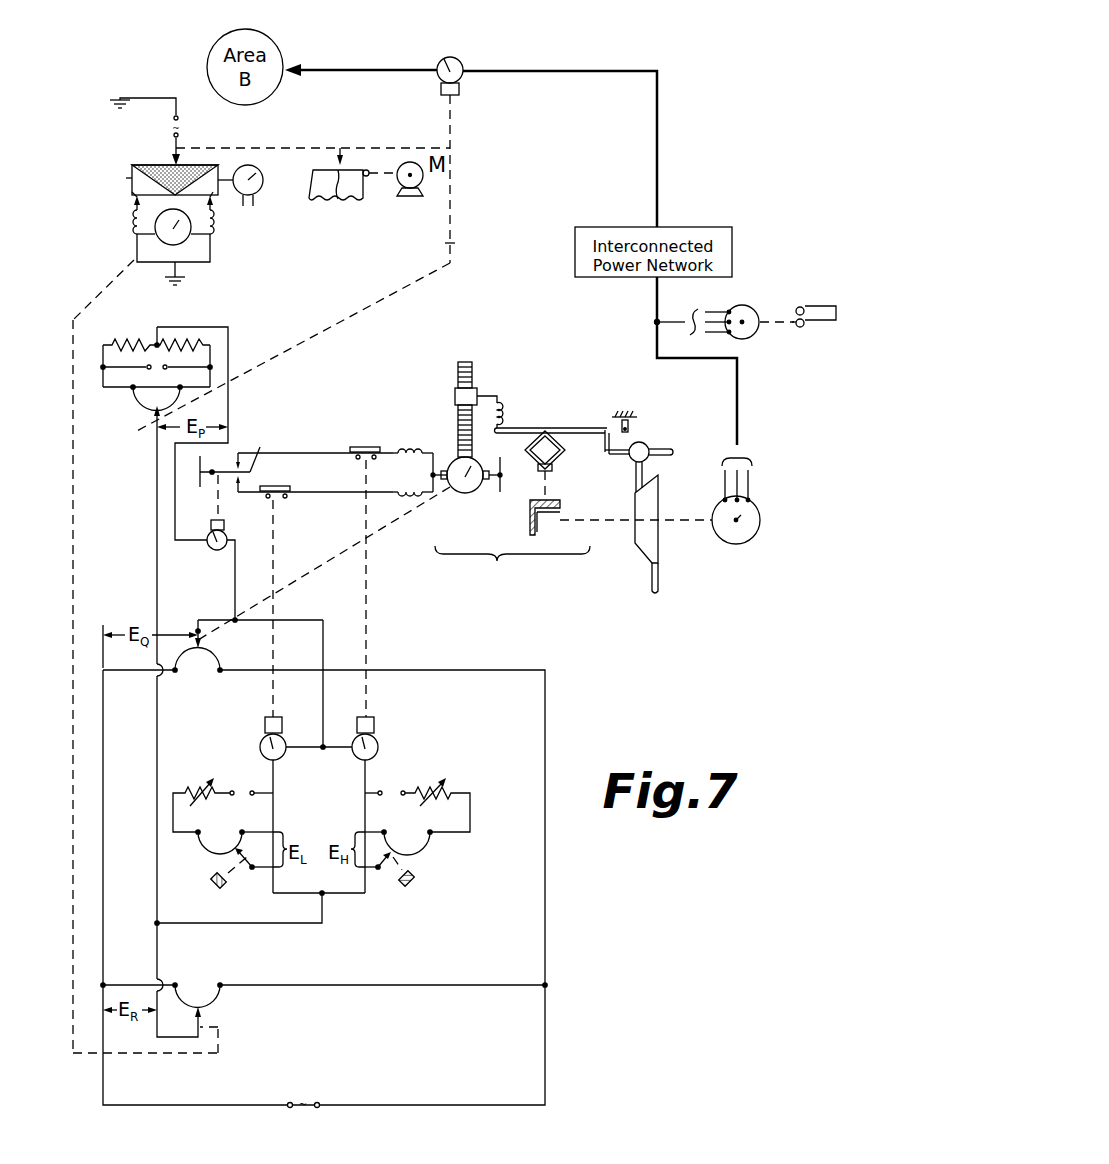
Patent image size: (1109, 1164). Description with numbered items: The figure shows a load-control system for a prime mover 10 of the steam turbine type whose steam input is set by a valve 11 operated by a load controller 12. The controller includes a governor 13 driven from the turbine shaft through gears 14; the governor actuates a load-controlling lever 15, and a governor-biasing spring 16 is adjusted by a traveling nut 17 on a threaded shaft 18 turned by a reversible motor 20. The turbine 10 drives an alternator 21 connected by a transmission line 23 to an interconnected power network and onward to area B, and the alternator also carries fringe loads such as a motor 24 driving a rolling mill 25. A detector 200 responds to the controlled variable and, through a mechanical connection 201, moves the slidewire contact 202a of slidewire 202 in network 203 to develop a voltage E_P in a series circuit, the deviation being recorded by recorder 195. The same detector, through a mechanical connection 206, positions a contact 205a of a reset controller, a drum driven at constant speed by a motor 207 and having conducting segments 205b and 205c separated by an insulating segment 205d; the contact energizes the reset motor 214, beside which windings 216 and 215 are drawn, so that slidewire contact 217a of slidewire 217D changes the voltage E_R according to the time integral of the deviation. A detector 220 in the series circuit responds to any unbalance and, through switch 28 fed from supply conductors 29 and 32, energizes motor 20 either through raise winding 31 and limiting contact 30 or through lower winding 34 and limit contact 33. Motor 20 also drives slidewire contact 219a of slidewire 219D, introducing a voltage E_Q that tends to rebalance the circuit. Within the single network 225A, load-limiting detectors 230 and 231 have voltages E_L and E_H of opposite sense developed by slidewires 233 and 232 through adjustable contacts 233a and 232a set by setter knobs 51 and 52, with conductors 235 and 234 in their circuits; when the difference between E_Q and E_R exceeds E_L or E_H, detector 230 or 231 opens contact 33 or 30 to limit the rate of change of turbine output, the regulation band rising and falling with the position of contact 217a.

The detector 200 is at (461, 61).
The transmission line 23 is at (606, 71).
The mechanical connection 201 is at (460, 243).
The contact 205a is at (173, 162).
The conducting segment 205b is at (132, 192).
The conducting segment 205c is at (213, 192).
The insulating segment 205d is at (193, 178).
The motor 207 is at (262, 172).
The left coil 216 is at (134, 234).
The right coil 215 is at (213, 234).
The reset motor 214 is at (186, 236).
The mechanical connection 206 is at (327, 147).
The recorder 195 is at (362, 226).
The motor 24 is at (755, 337).
The rolling mill 25 is at (820, 289).
The alternator 21 is at (745, 540).
The prime mover 10 is at (656, 553).
The valve 11 is at (643, 445).
The load-controlling lever 15 is at (571, 427).
The governor-biasing spring 16 is at (503, 410).
The threaded shaft 18 is at (473, 367).
The traveling nut 17 is at (455, 396).
The governor 13 is at (557, 452).
The gears 14 is at (541, 518).
The reversible motor 20 is at (471, 490).
The supply conductor 32 is at (503, 488).
The raise motor winding 31 is at (410, 450).
The lower motor winding 34 is at (410, 498).
The load controller 12 is at (488, 586).
The switch 28 is at (251, 466).
The supply conductor 29 is at (200, 478).
The limiting contact 30 is at (366, 446).
The limit contact 33 is at (290, 488).
The detector 220 is at (212, 550).
The network 203 is at (158, 356).
The slidewire 202 is at (144, 405).
The slidewire contact 202a is at (156, 415).
The slidewire contact 219a is at (208, 646).
The slidewire 219D is at (184, 663).
The network 225A is at (435, 730).
The detector 230 is at (261, 742).
The detector 231 is at (373, 731).
The conductor 235 is at (278, 771).
The conductor 234 is at (362, 783).
The slidewire 233 is at (203, 845).
The adjustable contact 233a is at (252, 871).
The setter knob 51 is at (213, 886).
The slidewire 232 is at (428, 850).
The adjustable contact 232a is at (380, 870).
The setter knob 52 is at (415, 885).
The slidewire 217D is at (186, 1000).
The slidewire contact 217a is at (206, 1015).